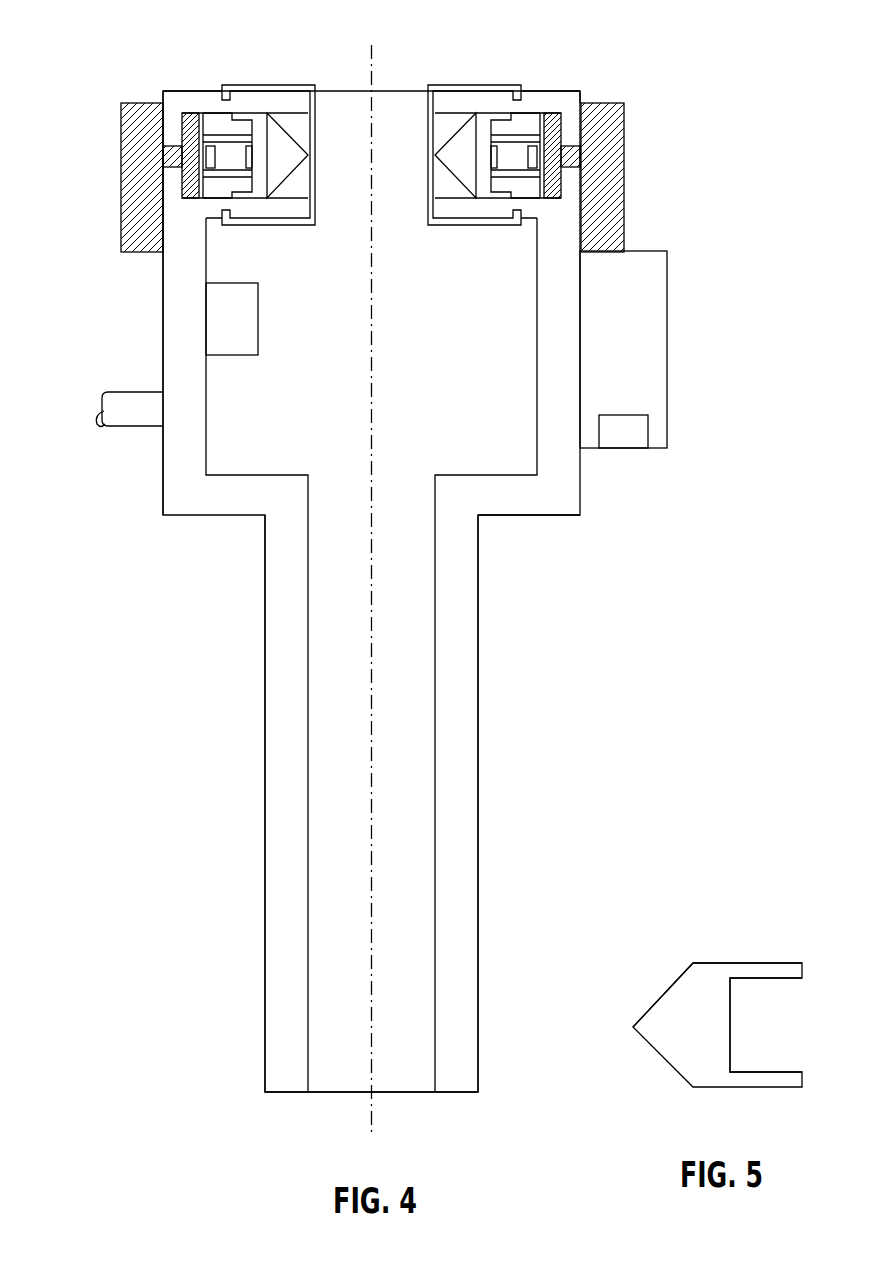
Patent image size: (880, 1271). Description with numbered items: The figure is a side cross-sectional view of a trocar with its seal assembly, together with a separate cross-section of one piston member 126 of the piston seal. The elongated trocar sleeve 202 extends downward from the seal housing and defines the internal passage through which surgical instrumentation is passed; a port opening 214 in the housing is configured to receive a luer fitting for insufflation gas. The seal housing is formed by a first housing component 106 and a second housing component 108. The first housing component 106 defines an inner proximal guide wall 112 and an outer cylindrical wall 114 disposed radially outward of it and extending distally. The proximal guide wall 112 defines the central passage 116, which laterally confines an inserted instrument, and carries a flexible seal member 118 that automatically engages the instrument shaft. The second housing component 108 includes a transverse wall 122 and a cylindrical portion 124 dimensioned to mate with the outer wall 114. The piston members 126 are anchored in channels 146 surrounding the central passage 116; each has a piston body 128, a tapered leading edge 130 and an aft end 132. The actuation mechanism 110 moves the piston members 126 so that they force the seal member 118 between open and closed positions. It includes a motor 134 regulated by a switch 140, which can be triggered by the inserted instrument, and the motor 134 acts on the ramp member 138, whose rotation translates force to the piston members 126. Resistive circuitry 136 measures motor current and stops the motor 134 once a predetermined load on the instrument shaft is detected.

In FIG. 4, the first housing component 106 is at (173, 90).
In FIG. 4, the second housing component 108 is at (177, 367).
In FIG. 4, the actuation mechanism 110 is at (703, 148).
In FIG. 4, the proximal guide wall 112 is at (560, 90).
In FIG. 4, the outer cylindrical wall 114 is at (585, 94).
In FIG. 4, the central passage 116 is at (420, 246).
In FIG. 4, the flexible seal member 118 is at (230, 82).
In FIG. 4, the transverse wall 122 is at (552, 515).
In FIG. 4, the cylindrical portion 124 is at (163, 312).
In FIG. 4, the piston member 126 is at (294, 168).
In FIG. 5, the piston member 126 is at (732, 963).
In FIG. 5, the piston body 128 is at (713, 1040).
In FIG. 5, the tapered leading edge 130 is at (668, 990).
In FIG. 5, the aft end 132 is at (735, 1010).
In FIG. 4, the motor 134 is at (642, 360).
In FIG. 4, the resistive circuitry 136 is at (648, 430).
In FIG. 4, the ramp member 138 is at (121, 165).
In FIG. 4, the switch 140 is at (250, 330).
In FIG. 4, the channel 146 is at (300, 127).
In FIG. 4, the trocar sleeve 202 is at (478, 688).
In FIG. 4, the port opening 214 is at (135, 428).